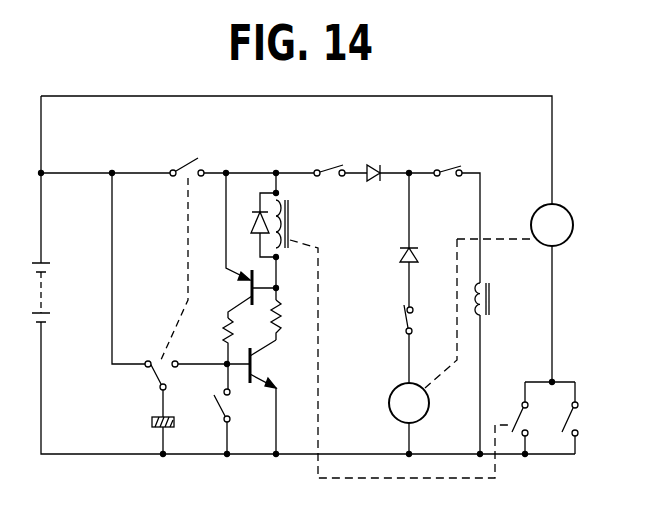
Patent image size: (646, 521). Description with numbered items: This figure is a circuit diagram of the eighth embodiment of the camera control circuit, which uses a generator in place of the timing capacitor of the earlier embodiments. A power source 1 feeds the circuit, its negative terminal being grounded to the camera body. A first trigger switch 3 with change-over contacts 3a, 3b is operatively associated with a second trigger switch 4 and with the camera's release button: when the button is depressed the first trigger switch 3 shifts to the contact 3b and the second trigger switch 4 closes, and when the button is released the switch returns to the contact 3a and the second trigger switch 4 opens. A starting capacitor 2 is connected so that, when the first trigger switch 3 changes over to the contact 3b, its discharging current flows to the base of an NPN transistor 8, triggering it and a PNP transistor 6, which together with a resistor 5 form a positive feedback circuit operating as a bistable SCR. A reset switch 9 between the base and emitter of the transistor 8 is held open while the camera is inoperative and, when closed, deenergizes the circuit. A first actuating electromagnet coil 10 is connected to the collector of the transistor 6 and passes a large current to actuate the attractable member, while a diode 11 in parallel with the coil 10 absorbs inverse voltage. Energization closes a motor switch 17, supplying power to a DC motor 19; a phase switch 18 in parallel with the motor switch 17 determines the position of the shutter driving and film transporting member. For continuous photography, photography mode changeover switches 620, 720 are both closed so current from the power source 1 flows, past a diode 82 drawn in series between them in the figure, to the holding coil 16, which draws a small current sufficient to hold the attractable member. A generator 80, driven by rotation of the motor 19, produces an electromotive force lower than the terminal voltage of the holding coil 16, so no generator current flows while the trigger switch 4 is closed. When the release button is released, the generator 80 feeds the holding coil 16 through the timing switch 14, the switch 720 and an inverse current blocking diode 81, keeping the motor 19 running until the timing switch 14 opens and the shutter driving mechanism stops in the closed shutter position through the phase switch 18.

The power source 1 is at (50, 316).
The starting capacitor 2 is at (150, 421).
The first trigger switch 3 is at (158, 378).
The change-over contact 3a is at (146, 361).
The change-over contact 3b is at (189, 387).
The second trigger switch 4 is at (184, 163).
The resistor 5 is at (284, 316).
The PNP transistor 6 is at (245, 285).
The NPN transistor 8 is at (256, 362).
The reset switch 9 is at (232, 412).
The first actuating electromagnet coil 10 is at (292, 212).
The diode 11 is at (252, 222).
The timing switch 14 is at (404, 318).
The second electromagnet coil 16 is at (492, 298).
The motor switch 17 is at (522, 404).
The phase switch 18 is at (566, 420).
The DC motor 19 is at (568, 215).
The generator 80 is at (396, 385).
The inverse current blocking diode 81 is at (398, 252).
The diode 82 is at (372, 182).
The photography mode changeover switch 620 is at (328, 171).
The photography mode changeover switch 720 is at (448, 170).